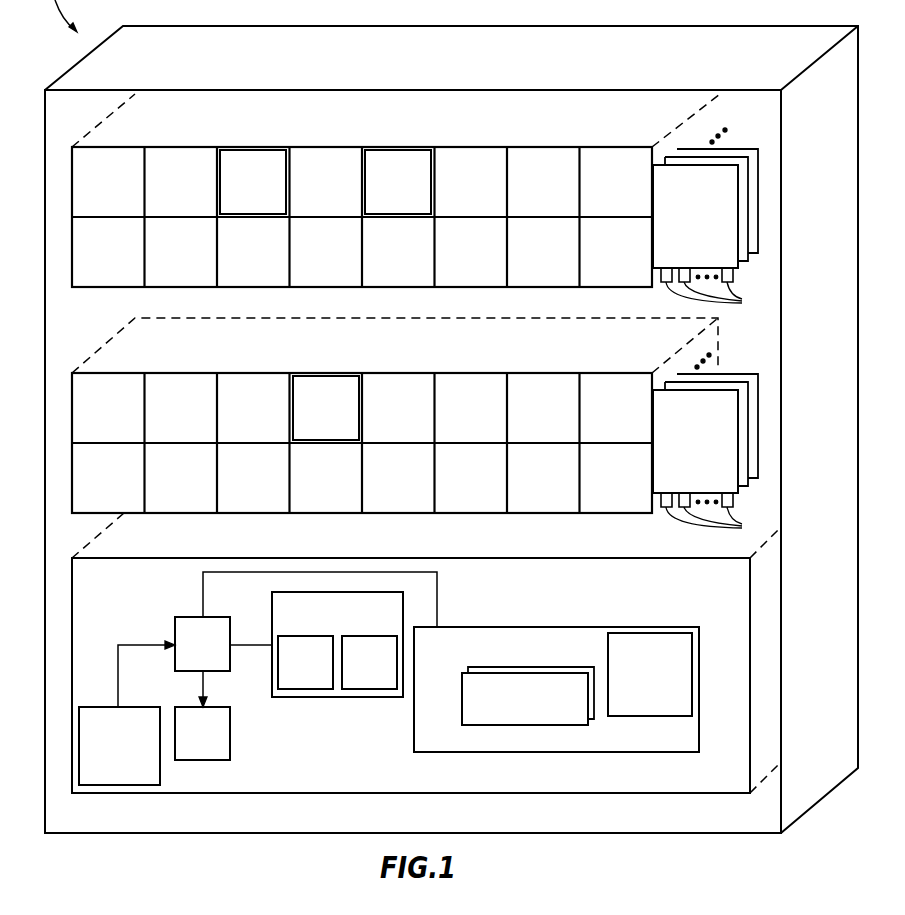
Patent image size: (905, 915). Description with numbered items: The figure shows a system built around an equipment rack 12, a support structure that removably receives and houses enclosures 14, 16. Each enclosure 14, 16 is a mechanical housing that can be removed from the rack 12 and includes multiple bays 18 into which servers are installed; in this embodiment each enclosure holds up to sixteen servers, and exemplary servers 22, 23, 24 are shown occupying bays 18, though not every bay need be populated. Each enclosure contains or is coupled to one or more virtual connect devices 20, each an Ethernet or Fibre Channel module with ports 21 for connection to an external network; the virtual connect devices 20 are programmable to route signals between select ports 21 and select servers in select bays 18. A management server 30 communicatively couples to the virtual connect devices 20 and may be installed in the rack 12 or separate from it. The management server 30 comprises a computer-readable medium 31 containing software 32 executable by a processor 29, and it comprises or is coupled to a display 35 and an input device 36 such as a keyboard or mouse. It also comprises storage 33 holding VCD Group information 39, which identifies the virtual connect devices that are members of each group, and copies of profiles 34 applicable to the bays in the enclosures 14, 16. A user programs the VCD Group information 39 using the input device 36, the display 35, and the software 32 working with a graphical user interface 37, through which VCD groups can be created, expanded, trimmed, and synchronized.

The equipment rack 12 is at (78, 121).
The enclosure 14 is at (71, 197).
The enclosure 16 is at (71, 430).
The bay 18 is at (223, 146).
The virtual connect device 20 is at (686, 475).
The port 21 is at (712, 407).
The server 22 is at (243, 203).
The server 23 is at (388, 203).
The server 24 is at (316, 429).
The processor 29 is at (192, 665).
The management server 30 is at (708, 605).
The computer-readable medium 31 is at (370, 623).
The software 32 is at (295, 681).
The storage 33 is at (528, 653).
The profiles 34 is at (462, 703).
The display 35 is at (192, 753).
The input device 36 is at (109, 776).
The graphical user interface 37 is at (359, 681).
The VCD Group information 39 is at (661, 706).